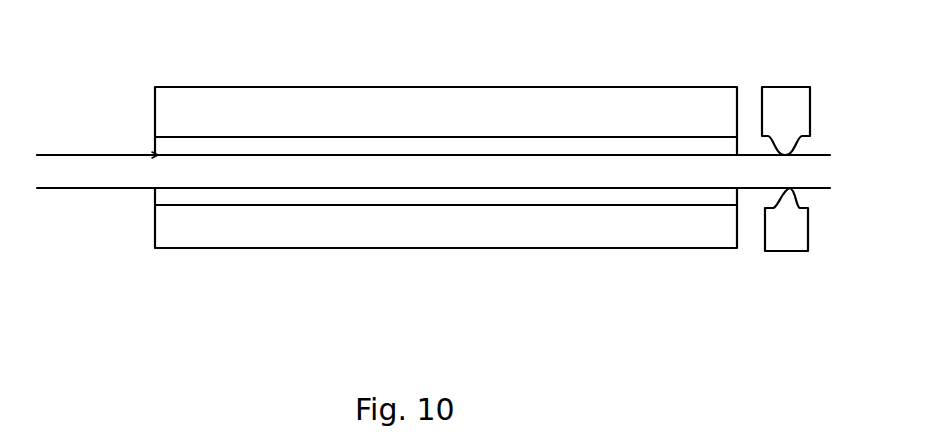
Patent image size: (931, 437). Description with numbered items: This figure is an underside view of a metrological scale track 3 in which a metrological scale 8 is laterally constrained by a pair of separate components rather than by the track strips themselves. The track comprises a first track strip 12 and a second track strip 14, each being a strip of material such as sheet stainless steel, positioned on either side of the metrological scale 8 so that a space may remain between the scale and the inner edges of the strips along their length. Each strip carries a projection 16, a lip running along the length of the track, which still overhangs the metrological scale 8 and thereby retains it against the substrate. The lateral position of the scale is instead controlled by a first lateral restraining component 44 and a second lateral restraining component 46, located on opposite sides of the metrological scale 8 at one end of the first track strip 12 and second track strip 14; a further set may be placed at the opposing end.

The metrological scale track 3 is at (240, 325).
The metrological scale 8 is at (63, 153).
The first track strip 12 is at (545, 248).
The second track strip 14 is at (505, 88).
The projection 16 is at (153, 158).
The first lateral restraining component 44 is at (808, 238).
The second lateral restraining component 46 is at (810, 100).